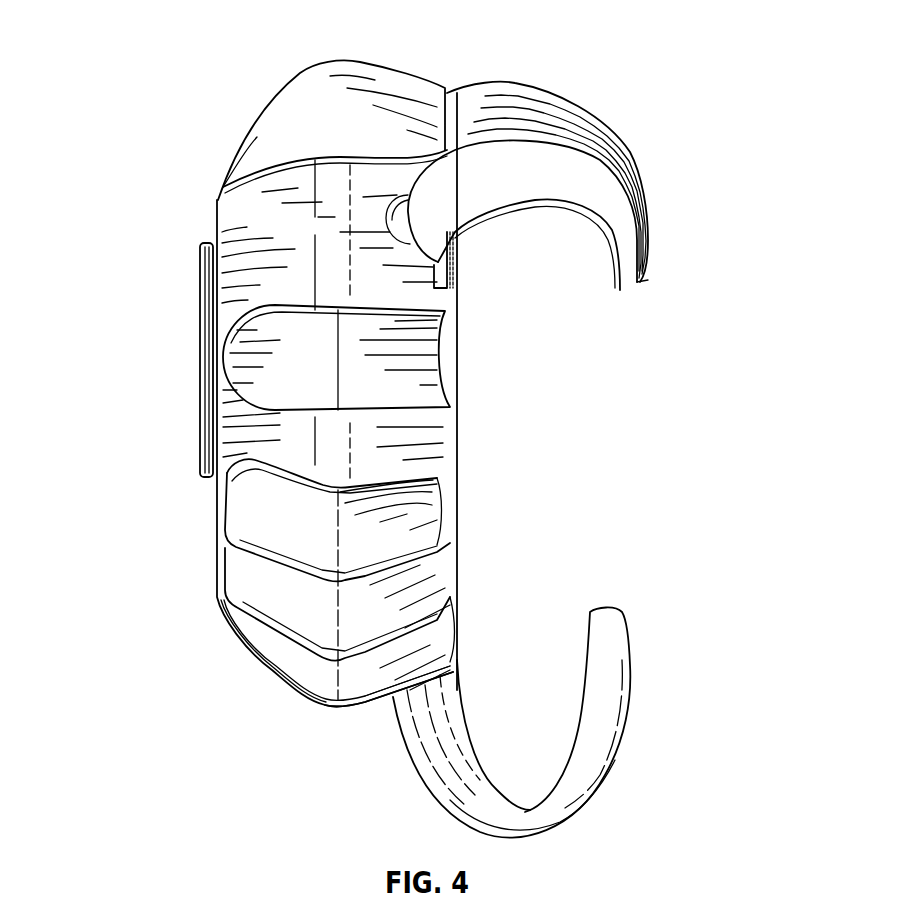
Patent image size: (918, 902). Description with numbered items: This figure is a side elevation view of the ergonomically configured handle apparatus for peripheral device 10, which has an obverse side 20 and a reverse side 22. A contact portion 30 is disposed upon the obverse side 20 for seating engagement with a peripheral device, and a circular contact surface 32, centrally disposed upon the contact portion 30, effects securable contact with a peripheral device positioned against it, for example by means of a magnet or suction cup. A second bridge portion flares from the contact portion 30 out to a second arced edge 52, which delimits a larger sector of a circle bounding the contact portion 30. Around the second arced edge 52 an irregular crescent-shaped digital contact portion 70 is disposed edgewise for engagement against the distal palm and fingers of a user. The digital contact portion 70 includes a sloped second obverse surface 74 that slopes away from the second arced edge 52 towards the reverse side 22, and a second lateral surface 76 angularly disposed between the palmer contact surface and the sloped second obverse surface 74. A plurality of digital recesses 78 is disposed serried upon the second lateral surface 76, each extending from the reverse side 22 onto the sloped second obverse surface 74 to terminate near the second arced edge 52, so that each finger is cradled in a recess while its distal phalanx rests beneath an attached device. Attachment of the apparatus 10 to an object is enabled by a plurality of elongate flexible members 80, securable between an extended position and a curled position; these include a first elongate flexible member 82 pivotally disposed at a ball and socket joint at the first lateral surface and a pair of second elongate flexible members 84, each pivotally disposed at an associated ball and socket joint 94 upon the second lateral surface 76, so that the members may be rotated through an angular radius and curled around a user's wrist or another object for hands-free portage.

The ergonomically configured handle apparatus for peripheral device 10 is at (631, 44).
The obverse side 20 is at (124, 244).
The reverse side 22 is at (548, 575).
The contact portion 30 is at (127, 393).
The contact surface 32 is at (200, 365).
The second arced edge 52 is at (215, 210).
The digital contact portion 70 is at (221, 673).
The sloped second obverse surface 74 is at (228, 608).
The second lateral surface 76 is at (372, 707).
The digital recesses 78 is at (468, 392).
The elongate flexible members 80 is at (733, 167).
The first elongate flexible member 82 is at (630, 653).
The second elongate flexible member 84 is at (650, 222).
The ball and socket joint 94 is at (461, 244).